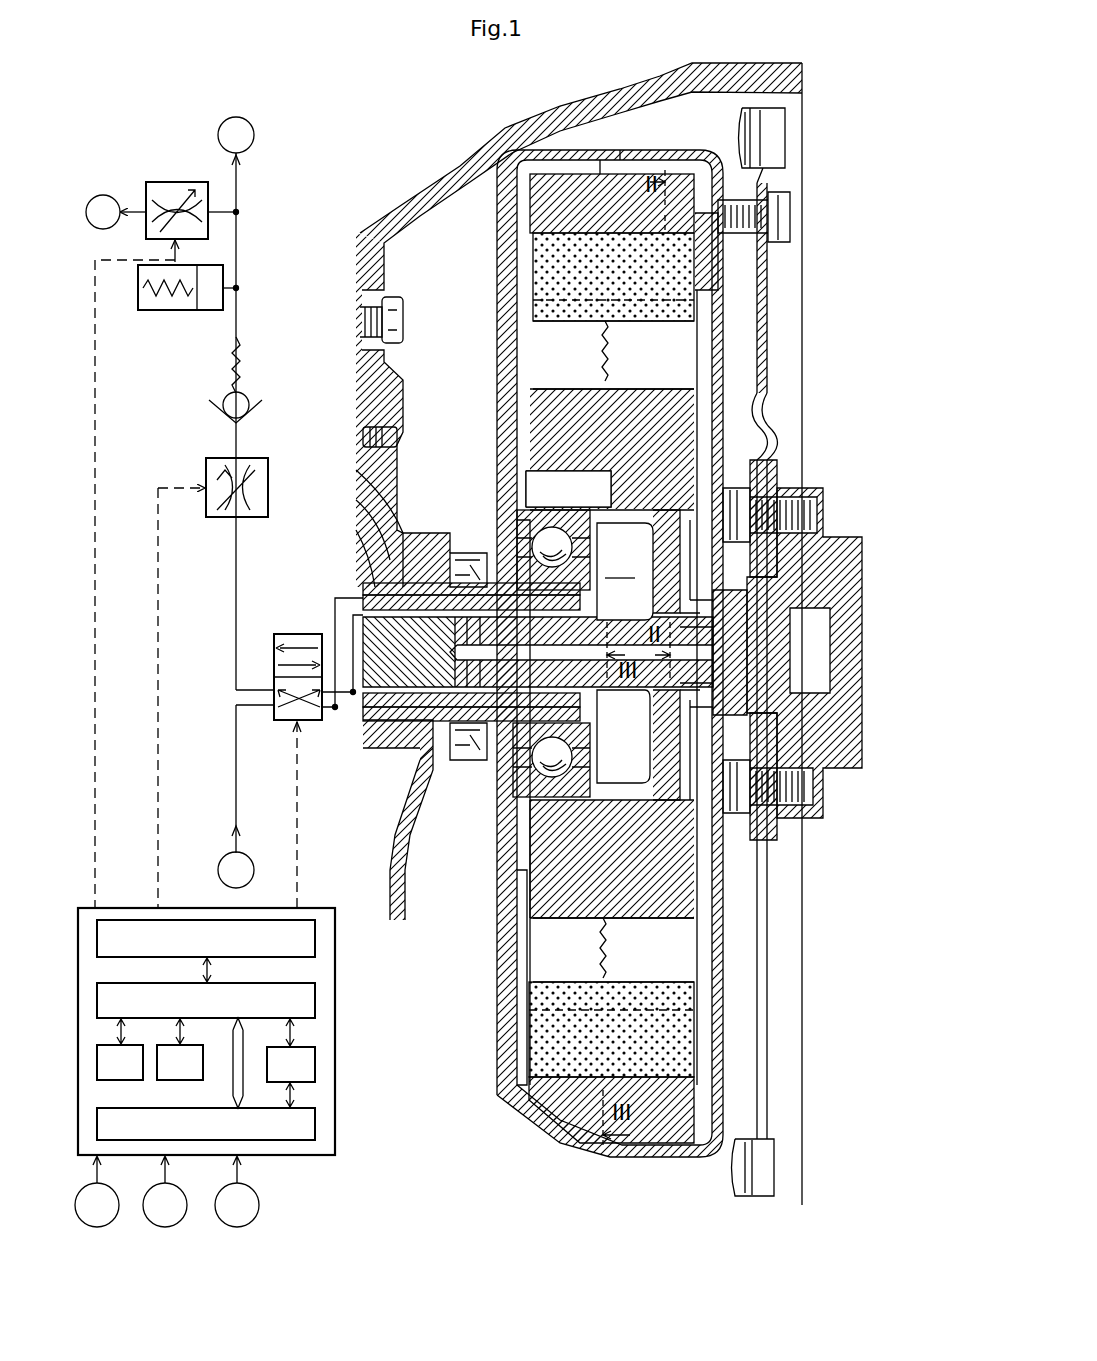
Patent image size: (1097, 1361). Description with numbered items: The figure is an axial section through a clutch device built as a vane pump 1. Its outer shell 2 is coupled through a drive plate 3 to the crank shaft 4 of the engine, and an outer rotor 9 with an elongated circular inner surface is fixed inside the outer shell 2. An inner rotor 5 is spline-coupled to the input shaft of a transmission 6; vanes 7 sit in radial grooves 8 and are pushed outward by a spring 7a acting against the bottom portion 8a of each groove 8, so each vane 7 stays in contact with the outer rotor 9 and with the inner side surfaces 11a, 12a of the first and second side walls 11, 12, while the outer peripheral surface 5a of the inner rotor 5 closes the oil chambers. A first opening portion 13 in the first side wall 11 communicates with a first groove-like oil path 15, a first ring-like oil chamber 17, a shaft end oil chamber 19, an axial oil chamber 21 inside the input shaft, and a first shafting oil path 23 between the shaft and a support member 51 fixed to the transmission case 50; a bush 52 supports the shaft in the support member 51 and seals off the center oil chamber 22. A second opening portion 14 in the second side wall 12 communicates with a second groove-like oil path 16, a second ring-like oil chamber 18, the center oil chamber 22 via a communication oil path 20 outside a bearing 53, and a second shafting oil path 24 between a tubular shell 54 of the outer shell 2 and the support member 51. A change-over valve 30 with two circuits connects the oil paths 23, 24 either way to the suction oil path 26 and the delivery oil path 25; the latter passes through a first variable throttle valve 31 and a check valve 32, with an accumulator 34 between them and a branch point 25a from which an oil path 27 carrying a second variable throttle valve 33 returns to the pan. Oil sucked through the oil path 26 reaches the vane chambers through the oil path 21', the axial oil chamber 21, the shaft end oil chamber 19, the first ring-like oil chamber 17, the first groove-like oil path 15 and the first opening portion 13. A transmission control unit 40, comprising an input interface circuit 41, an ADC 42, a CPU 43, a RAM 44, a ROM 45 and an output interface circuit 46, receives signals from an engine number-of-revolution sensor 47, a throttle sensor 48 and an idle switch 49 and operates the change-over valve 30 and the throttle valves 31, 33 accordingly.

The vane pump 1 is at (500, 160).
The outer shell 2 is at (660, 160).
The drive plate 3 is at (768, 330).
The crank shaft 4 is at (833, 545).
The inner rotor 5 is at (540, 440).
The outer peripheral surface 5a is at (505, 315).
The input shaft of a transmission 6 is at (497, 580).
The vane 7 is at (687, 340).
The spring 7a is at (600, 340).
The groove 8 is at (690, 380).
The bottom portion 8a is at (580, 389).
The outer rotor 9 is at (612, 185).
The first side wall 11 is at (690, 1045).
The inner side surface 11a is at (690, 1000).
The second side wall 12 is at (510, 225).
The inner side surface 12a is at (535, 270).
The first opening portion 13 is at (760, 250).
The second opening portion 14 is at (517, 1020).
The first groove-like oil path 15 is at (720, 300).
The second groove-like oil path 16 is at (517, 960).
The first ring-like oil chamber 17 is at (745, 455).
The second ring-like oil chamber 18 is at (520, 850).
The shaft end oil chamber 19 is at (720, 600).
The communication oil path 20 is at (560, 490).
The axial oil chamber 21 is at (634, 639).
The oil path 21' is at (475, 785).
The center oil chamber 22 is at (585, 565).
The first shafting oil path 23 is at (385, 595).
The second shafting oil path 24 is at (400, 583).
The oil path 25 is at (240, 265).
The branch point 25a is at (240, 212).
The oil path 26 is at (236, 772).
The oil path 27 is at (230, 200).
The change-over valve 30 is at (298, 634).
The first variable throttle valve 31 is at (206, 470).
The check valve 32 is at (225, 388).
The second variable throttle valve 33 is at (158, 182).
The accumulator 34 is at (150, 310).
The transmission control unit 40 is at (335, 1125).
The input interface circuit 41 is at (206, 1124).
The ADC 42 is at (291, 1077).
The CPU 43 is at (206, 1045).
The RAM 44 is at (180, 1062).
The ROM 45 is at (120, 1062).
The output interface circuit 46 is at (206, 951).
The engine number-of-revolution sensor 47 is at (97, 1191).
The throttle sensor 48 is at (165, 1191).
The idle switch 49 is at (237, 1191).
The transmission case 50 is at (435, 195).
The support member 51 is at (360, 583).
The bush 52 is at (581, 743).
The bearing 53 is at (487, 560).
The tubular shell 54 is at (420, 580).